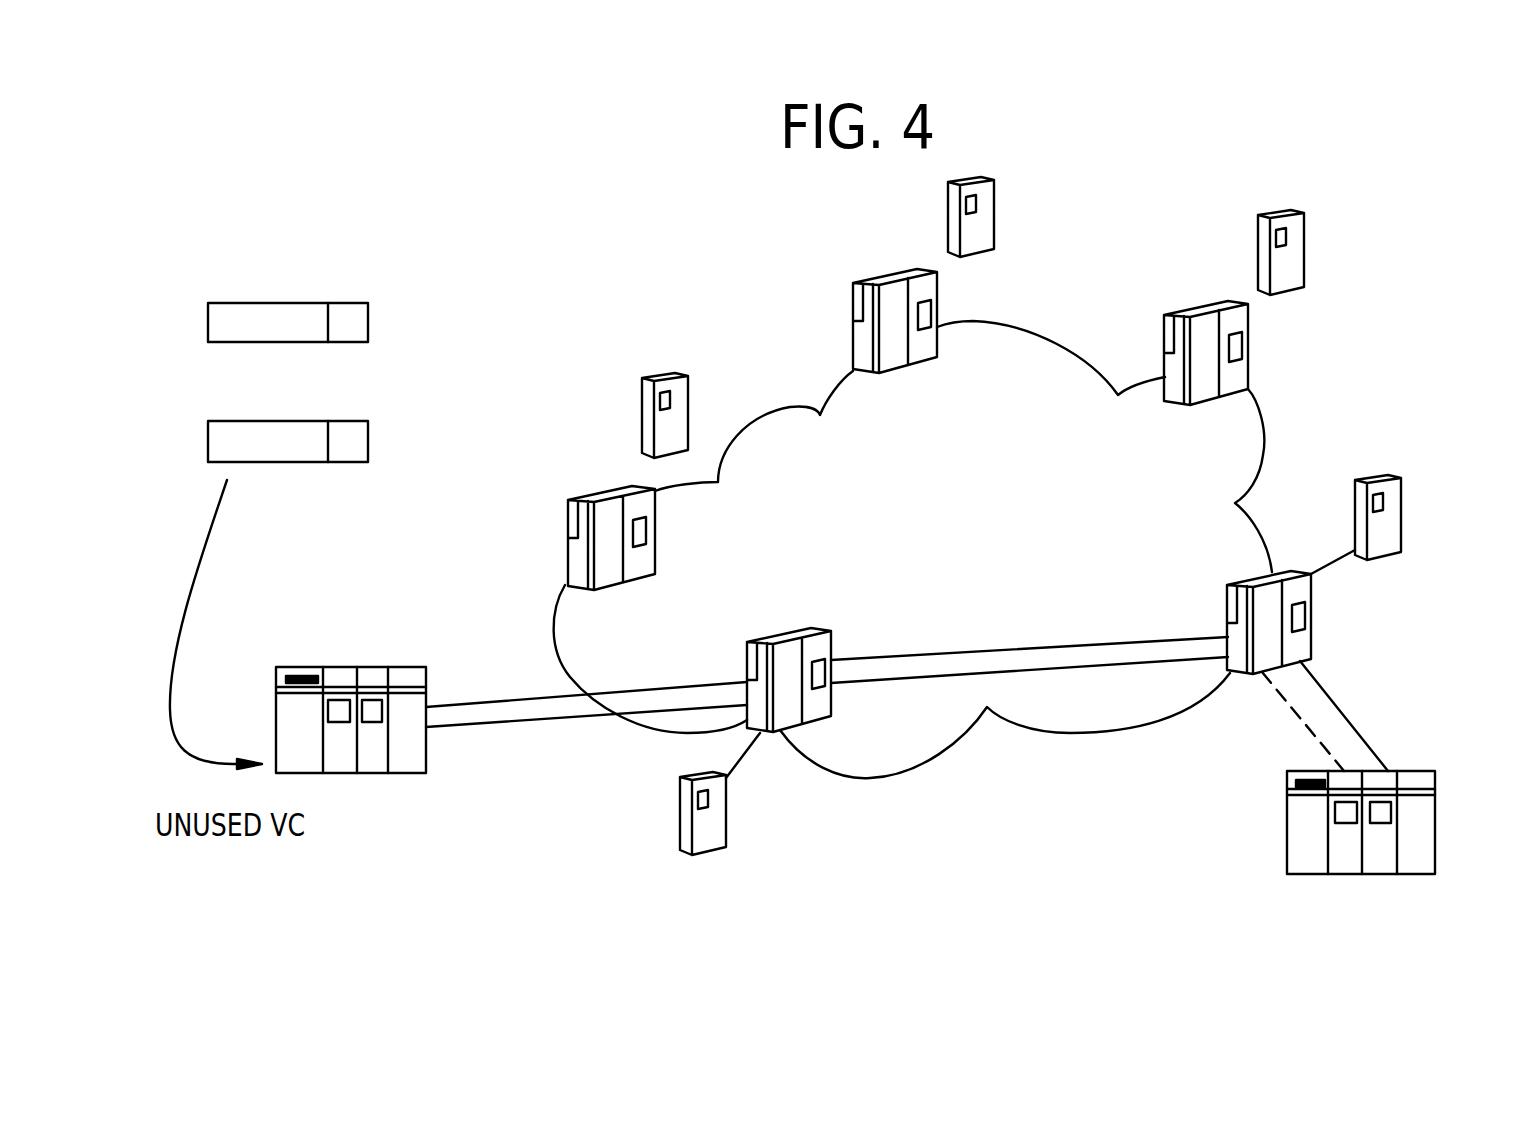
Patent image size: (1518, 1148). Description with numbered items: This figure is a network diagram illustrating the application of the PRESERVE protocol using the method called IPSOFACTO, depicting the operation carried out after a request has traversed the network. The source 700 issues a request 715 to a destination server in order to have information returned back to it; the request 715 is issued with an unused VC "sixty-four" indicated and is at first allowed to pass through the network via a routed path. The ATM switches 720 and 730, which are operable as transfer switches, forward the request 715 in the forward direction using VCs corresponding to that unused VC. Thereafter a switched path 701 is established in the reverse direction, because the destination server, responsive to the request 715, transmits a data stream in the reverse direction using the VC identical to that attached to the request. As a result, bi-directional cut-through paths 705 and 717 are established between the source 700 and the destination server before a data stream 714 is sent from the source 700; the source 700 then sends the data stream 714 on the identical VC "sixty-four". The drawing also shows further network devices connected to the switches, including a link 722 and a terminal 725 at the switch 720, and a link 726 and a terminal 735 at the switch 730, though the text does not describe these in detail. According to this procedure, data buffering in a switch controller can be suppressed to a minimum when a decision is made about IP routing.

The source 700 is at (370, 775).
The switched path 701 is at (522, 722).
The bi-directional cut-through path 705 is at (512, 700).
The data stream 714 is at (368, 320).
The request 715 is at (368, 442).
The bi-directional cut-through path 717 is at (1030, 647).
The ATM switch 720 is at (825, 628).
The link 722 is at (747, 758).
The terminal 725 is at (712, 855).
The link 726 is at (1339, 545).
The ATM switch 730 is at (1310, 638).
The terminal 735 is at (1402, 497).